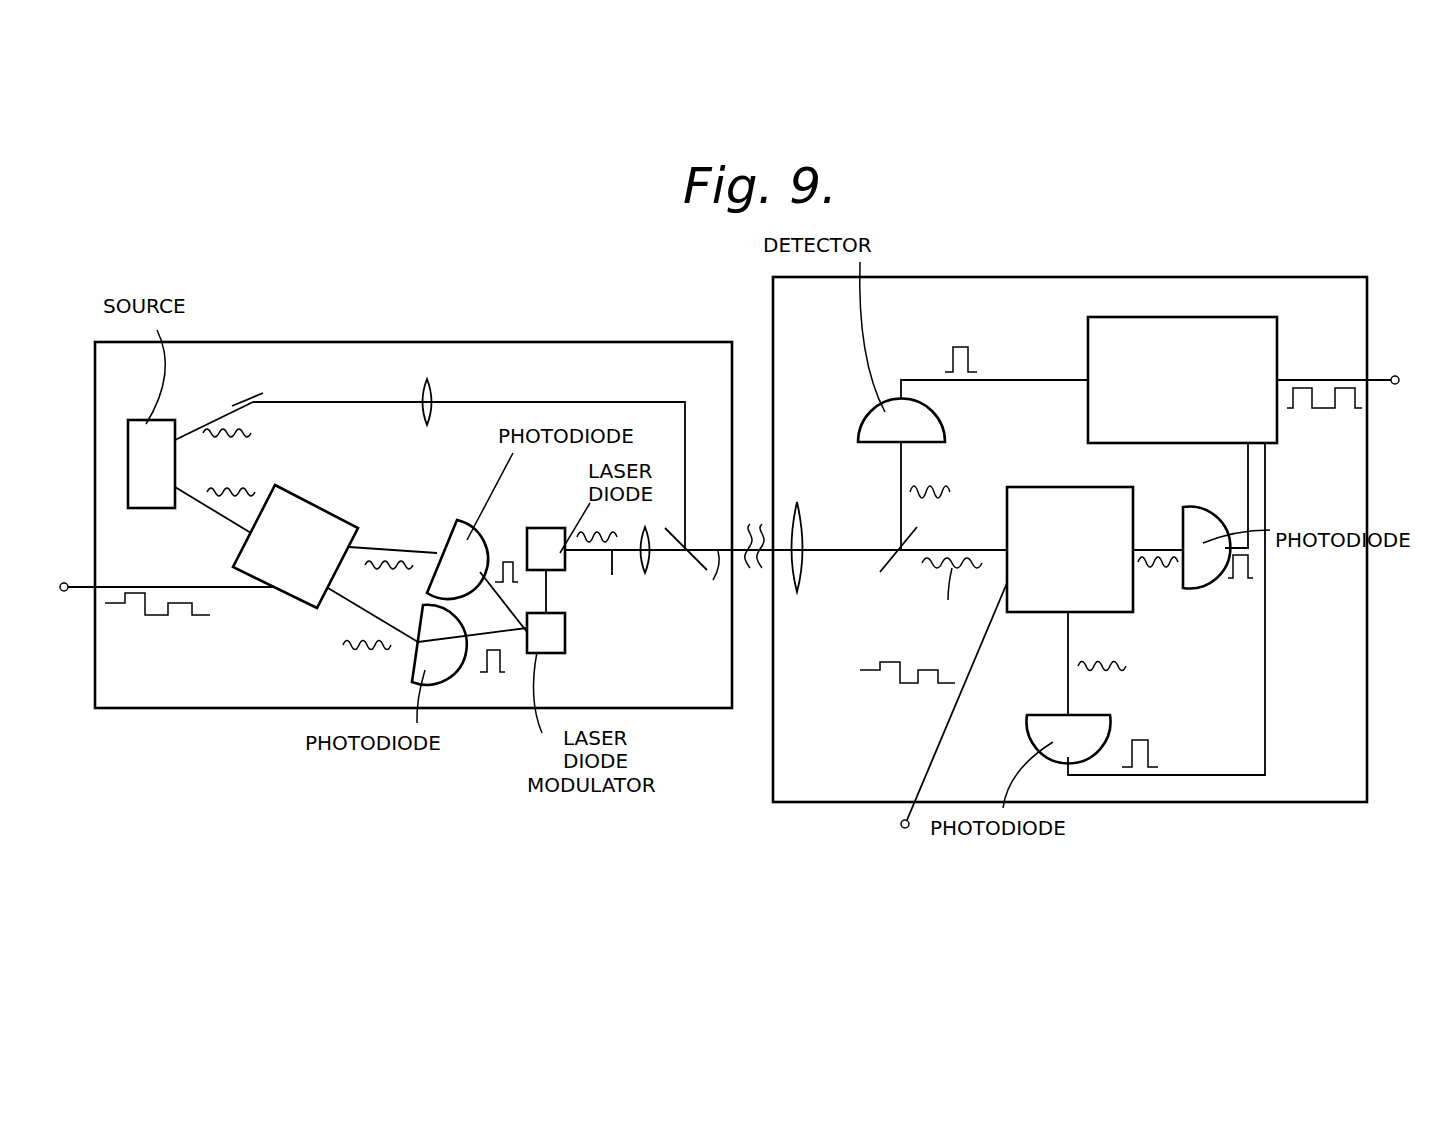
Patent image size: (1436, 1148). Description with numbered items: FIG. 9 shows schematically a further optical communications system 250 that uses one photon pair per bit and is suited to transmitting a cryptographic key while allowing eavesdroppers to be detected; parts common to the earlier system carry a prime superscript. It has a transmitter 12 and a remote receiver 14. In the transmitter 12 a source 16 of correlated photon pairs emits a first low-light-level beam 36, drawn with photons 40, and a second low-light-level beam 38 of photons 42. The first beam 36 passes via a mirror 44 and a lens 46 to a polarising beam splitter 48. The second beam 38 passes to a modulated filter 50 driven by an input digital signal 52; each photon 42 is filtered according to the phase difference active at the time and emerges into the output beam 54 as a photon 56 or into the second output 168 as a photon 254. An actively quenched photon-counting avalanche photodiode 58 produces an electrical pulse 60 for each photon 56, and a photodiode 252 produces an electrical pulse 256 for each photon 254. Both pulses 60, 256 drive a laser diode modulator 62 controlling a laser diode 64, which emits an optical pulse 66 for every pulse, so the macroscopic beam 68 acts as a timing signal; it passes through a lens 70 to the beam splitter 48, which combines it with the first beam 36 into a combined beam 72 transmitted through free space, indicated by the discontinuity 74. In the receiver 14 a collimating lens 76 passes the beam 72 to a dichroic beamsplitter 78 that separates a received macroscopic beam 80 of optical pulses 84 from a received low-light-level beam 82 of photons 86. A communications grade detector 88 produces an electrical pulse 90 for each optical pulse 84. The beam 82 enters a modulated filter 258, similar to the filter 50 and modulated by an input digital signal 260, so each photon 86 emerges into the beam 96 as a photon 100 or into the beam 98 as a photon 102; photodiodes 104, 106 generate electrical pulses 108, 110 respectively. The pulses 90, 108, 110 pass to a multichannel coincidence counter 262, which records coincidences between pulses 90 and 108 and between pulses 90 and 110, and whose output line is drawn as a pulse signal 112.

The optical communications system 250 is at (640, 266).
The transmitter 12 is at (281, 342).
The receiver 14 is at (1017, 277).
The source 16 is at (143, 420).
The first beam 36 is at (198, 427).
The second beam 38 is at (207, 500).
The first beam signal 40 is at (255, 434).
The photon 42 is at (235, 488).
The mirror 44 is at (262, 393).
The lens 46 is at (433, 395).
The polarising beam splitter 48 is at (665, 527).
The modulated filter 50 is at (323, 508).
The input digital signal 52 is at (158, 617).
The output beam 54 is at (388, 547).
The photon 56 is at (382, 568).
The photodiode 58 is at (467, 512).
The electrical pulse 60 is at (507, 558).
The laser diode modulator 62 is at (557, 653).
The laser diode 64 is at (557, 558).
The optical pulse 66 is at (592, 528).
The macroscopic light beam 68 is at (614, 579).
The lens 70 is at (648, 573).
The combined beam 72 is at (708, 579).
The discontinuity 74 is at (750, 568).
The collimating lens 76 is at (803, 578).
The dichroic beamsplitter 78 is at (886, 574).
The received macroscopic light beam 80 is at (897, 516).
The received low light level beam 82 is at (943, 552).
The optical pulse 84 is at (936, 488).
The photon 86 is at (949, 597).
The detector 88 is at (887, 412).
The electrical pulse 90 is at (952, 358).
The first output low light level beam 96 is at (1066, 625).
The second output low light level beam 98 is at (1157, 548).
The photon 100 is at (1085, 662).
The photon 102 is at (1157, 567).
The photodiode 104 is at (1032, 713).
The photodiode 106 is at (1212, 512).
The electrical pulse 108 is at (1150, 752).
The electrical pulse 110 is at (1236, 580).
The output pulse signal 112 is at (1327, 410).
The output 168 is at (343, 603).
The photodiode 252 is at (418, 668).
The photon 254 is at (362, 648).
The electrical pulse 256 is at (474, 677).
The modulated filter 258 is at (1075, 487).
The input digital signal 260 is at (913, 685).
The multichannel coincidence counter 262 is at (1175, 317).